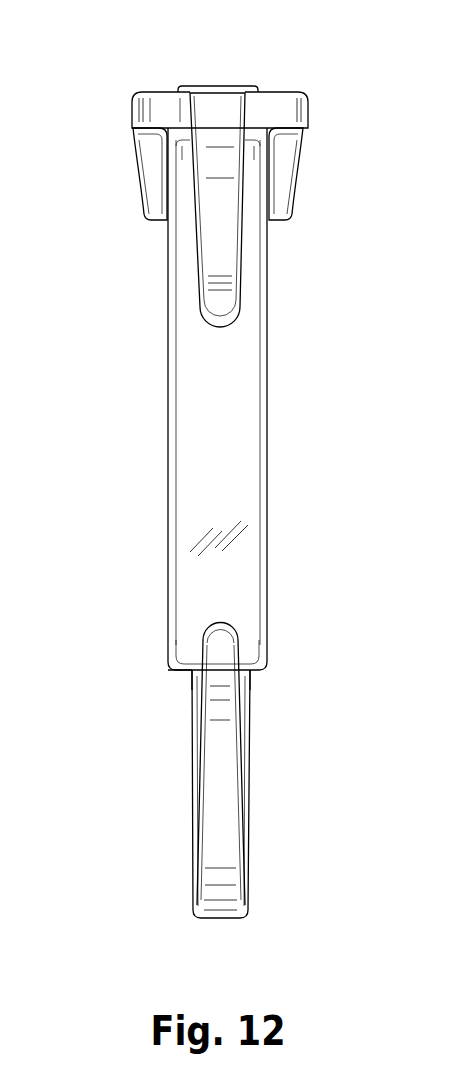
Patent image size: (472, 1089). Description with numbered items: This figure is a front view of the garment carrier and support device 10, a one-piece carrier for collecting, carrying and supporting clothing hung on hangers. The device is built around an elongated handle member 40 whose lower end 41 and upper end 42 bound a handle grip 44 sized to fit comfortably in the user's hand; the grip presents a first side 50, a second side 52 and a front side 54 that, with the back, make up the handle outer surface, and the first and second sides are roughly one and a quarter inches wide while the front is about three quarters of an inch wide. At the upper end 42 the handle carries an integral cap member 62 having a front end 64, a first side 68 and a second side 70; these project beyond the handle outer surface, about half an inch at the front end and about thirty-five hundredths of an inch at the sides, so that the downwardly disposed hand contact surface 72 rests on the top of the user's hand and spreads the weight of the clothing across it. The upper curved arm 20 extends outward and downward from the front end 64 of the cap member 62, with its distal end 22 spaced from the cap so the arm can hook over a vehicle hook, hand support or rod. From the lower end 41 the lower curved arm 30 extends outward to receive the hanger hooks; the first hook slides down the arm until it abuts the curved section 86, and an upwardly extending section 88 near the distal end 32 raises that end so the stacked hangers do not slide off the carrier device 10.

The garment carrier and support device 10 is at (350, 73).
The upper curved arm 20 is at (223, 162).
The distal end of upper curved arm 22 is at (218, 313).
The lower curved arm 30 is at (222, 810).
The distal end of lower curved arm 32 is at (222, 632).
The elongated handle member 40 is at (195, 597).
The lower end of handle member 41 is at (185, 673).
The upper end of handle member 42 is at (160, 137).
The handle grip 44 is at (237, 487).
The first side of handle grip 50 is at (167, 393).
The second side of handle grip 52 is at (271, 370).
The front side of handle grip 54 is at (203, 440).
The cap member 62 is at (260, 106).
The front end of cap member 64 is at (172, 103).
The first side of cap member 68 is at (131, 123).
The second side of cap member 70 is at (309, 122).
The hand contact surface 72 is at (157, 193).
The curved section 86 is at (254, 915).
The upwardly extending section 88 is at (219, 725).